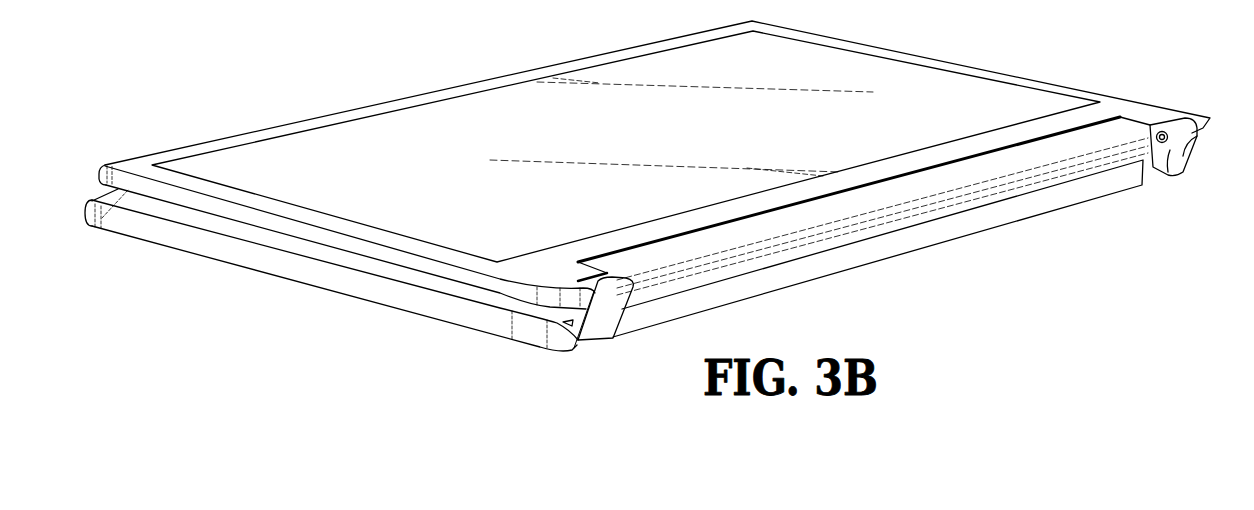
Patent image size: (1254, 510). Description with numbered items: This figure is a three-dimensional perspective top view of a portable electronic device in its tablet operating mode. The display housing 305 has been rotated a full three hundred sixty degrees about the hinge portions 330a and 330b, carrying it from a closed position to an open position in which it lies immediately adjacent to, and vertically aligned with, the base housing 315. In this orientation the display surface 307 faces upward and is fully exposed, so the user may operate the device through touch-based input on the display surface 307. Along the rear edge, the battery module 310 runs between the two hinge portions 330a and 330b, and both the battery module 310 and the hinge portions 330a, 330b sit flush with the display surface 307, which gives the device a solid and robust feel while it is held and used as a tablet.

The display housing 305 is at (327, 117).
The display surface 307 is at (507, 100).
The battery module 310 is at (887, 248).
The base housing 315 is at (345, 290).
The hinge portion 330a is at (608, 305).
The hinge portion 330b is at (1198, 142).